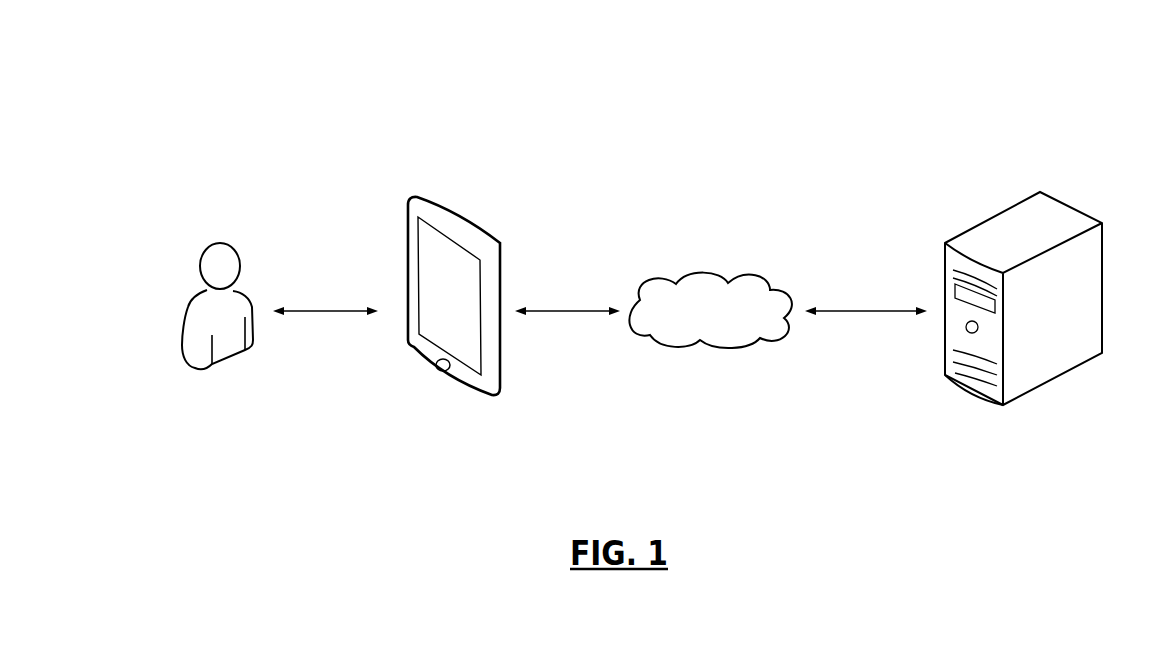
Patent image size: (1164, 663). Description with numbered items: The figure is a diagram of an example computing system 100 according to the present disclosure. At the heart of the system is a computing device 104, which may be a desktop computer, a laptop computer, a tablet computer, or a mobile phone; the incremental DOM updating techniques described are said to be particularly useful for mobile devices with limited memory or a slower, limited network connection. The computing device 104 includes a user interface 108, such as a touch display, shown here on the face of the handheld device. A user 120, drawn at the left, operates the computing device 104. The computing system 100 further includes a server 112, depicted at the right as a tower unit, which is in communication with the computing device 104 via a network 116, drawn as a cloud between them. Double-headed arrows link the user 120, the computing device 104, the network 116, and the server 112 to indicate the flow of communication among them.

The computing system 100 is at (950, 46).
The computing device 104 is at (500, 366).
The user interface 108 is at (448, 295).
The server 112 is at (1072, 206).
The network 116 is at (713, 275).
The user 120 is at (220, 242).